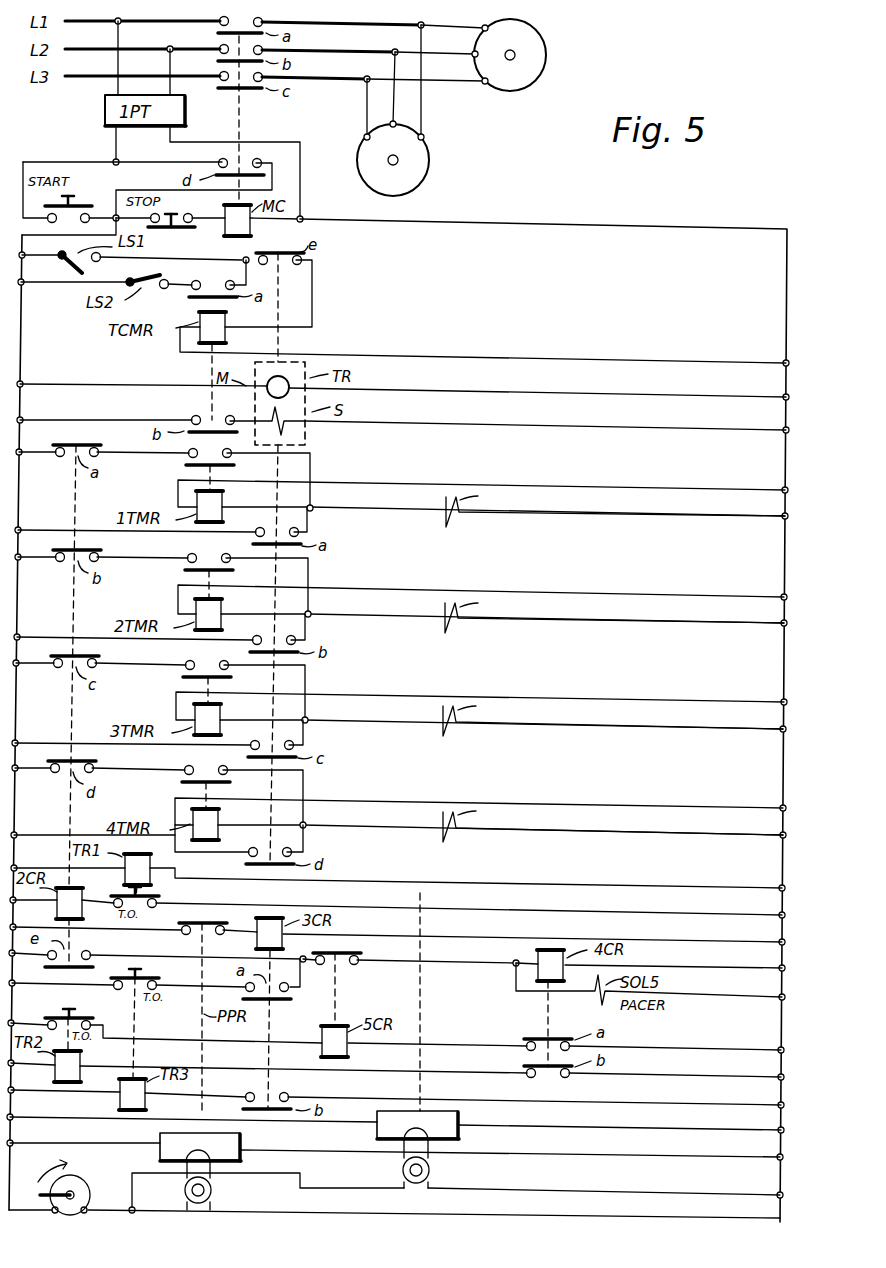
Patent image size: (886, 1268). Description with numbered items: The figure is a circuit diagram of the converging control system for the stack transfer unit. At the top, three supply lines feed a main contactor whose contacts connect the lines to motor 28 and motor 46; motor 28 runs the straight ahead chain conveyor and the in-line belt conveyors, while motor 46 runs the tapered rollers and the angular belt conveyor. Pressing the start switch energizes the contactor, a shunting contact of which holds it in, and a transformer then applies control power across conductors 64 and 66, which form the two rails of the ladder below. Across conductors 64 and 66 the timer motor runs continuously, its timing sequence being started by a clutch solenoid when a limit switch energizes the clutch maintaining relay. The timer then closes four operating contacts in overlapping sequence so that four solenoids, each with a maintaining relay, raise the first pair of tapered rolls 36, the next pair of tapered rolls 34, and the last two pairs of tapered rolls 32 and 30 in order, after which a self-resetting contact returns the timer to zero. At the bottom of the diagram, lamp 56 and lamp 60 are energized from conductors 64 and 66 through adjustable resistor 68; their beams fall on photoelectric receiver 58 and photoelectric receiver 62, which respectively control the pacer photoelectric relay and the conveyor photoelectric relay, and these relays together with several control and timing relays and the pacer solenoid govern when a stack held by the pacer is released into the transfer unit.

The motor 28 is at (546, 55).
The motor 46 is at (429, 165).
The conductor 64 is at (22, 352).
The conductor 66 is at (783, 290).
The first pair of tapered rolls 36 is at (615, 516).
The next pair of tapered rolls 34 is at (614, 619).
The pair of tapered rolls 32 is at (613, 723).
The pair of tapered rolls 30 is at (613, 828).
The lamp 56 is at (215, 1196).
The photoelectric receiver 58 is at (242, 1155).
The lamp 60 is at (432, 1172).
The photoelectric receiver 62 is at (460, 1135).
The adjustable resistor 68 is at (90, 1184).